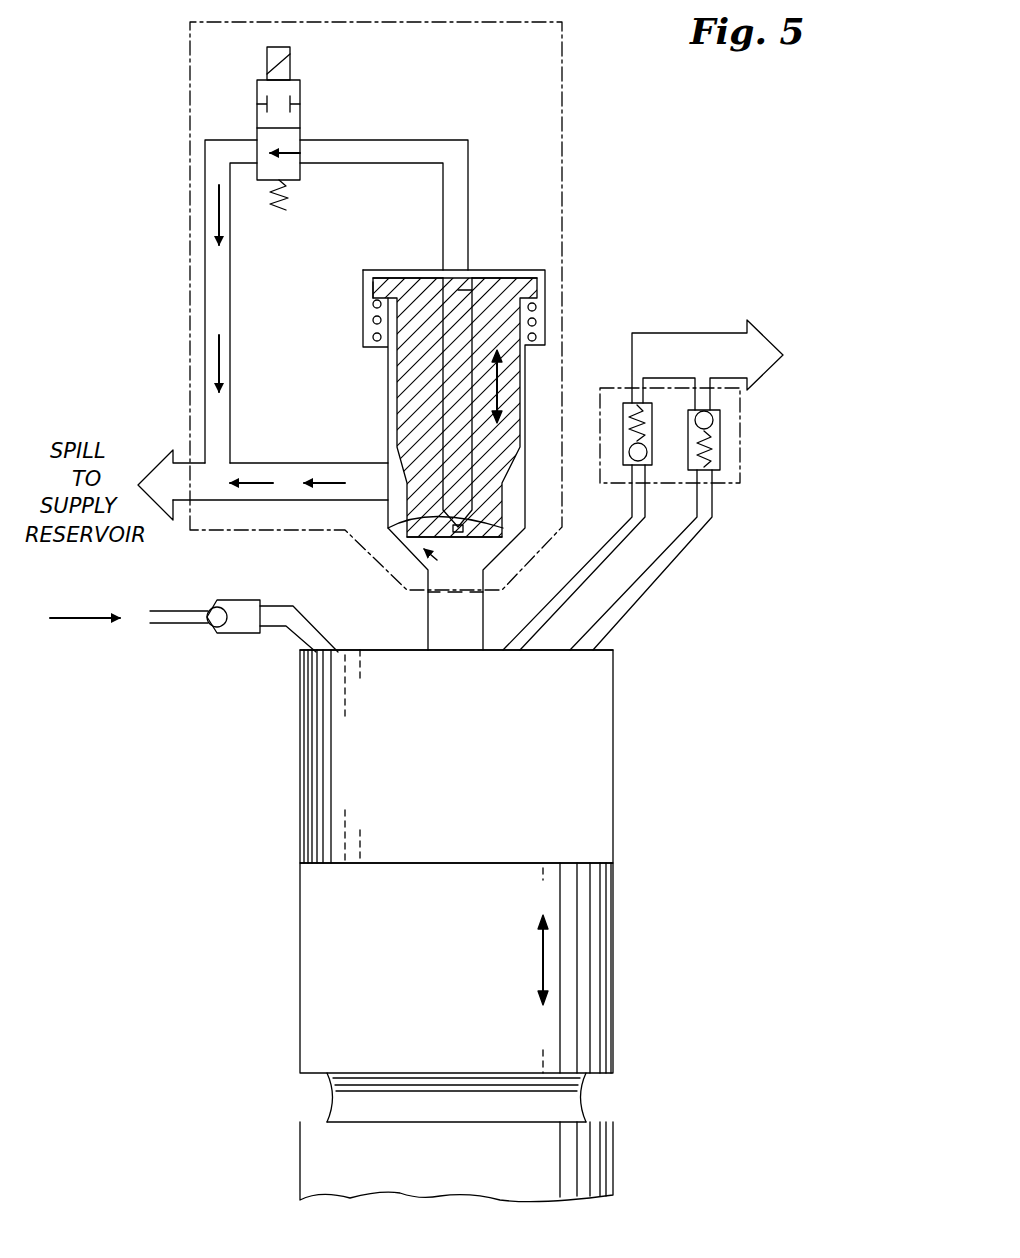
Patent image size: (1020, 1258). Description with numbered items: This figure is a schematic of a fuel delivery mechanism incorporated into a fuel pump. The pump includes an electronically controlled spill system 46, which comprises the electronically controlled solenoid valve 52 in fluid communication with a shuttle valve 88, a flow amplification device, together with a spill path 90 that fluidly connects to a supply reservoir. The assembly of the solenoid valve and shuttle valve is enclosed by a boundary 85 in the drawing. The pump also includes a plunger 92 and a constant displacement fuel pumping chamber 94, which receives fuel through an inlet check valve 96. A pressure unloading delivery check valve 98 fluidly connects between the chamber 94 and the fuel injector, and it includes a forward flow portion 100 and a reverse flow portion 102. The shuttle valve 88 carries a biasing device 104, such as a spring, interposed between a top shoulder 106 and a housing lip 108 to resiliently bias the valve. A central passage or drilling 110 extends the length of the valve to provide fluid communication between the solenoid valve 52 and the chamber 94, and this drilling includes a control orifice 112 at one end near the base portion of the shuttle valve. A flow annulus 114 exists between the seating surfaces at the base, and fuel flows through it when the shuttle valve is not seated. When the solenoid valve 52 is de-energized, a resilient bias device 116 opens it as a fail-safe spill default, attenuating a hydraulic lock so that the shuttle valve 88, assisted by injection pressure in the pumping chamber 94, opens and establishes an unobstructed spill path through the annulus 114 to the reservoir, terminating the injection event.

The electronically controlled spill system 46 is at (666, 162).
The electronically controlled solenoid valve 52 is at (309, 121).
The spill control valve assembly 85 is at (562, 55).
The shuttle valve 88 is at (405, 372).
The spill path 90 is at (218, 292).
The plunger 92 is at (462, 1036).
The constant displacement fuel pumping chamber 94 is at (468, 851).
The inlet check valve 96 is at (232, 634).
The pressure unloading delivery check valve 98 is at (740, 403).
The forward flow portion 100 is at (628, 465).
The reverse flow portion 102 is at (720, 458).
The biasing device 104 is at (372, 310).
The top shoulder 106 is at (378, 275).
The housing lip 108 is at (372, 347).
The central passage or drilling 110 is at (470, 290).
The control orifice 112 is at (457, 523).
The flow annulus 114 is at (457, 557).
The resilient bias device 116 is at (293, 196).